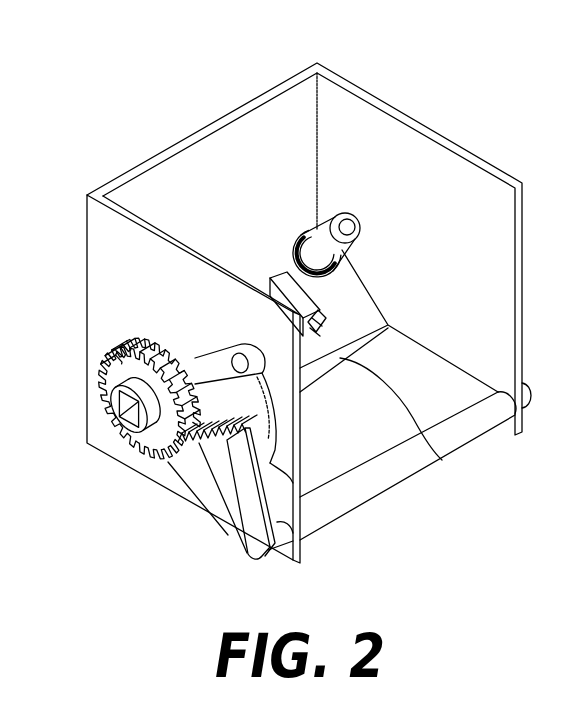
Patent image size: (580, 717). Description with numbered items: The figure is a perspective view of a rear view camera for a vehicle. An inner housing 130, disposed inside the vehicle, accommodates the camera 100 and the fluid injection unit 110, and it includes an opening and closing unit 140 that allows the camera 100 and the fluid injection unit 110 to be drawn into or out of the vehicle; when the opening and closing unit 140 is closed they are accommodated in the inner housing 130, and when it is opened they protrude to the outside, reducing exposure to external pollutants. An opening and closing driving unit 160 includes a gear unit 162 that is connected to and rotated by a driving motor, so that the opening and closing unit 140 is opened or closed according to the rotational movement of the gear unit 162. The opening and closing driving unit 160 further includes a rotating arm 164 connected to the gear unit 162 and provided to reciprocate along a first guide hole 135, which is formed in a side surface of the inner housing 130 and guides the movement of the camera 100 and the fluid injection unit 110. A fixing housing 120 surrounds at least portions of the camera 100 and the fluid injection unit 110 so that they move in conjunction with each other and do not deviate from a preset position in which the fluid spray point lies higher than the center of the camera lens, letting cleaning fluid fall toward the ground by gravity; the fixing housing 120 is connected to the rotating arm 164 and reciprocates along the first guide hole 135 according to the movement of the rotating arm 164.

The camera 100 is at (285, 273).
The fluid injection unit 110 is at (317, 229).
The fixing housing 120 is at (443, 458).
The inner housing 130 is at (95, 252).
The first guide hole 135 is at (313, 497).
The opening and closing unit 140 is at (377, 452).
The opening and closing driving unit 160 is at (187, 462).
The gear unit 162 is at (134, 458).
The rotating arm 164 is at (210, 445).